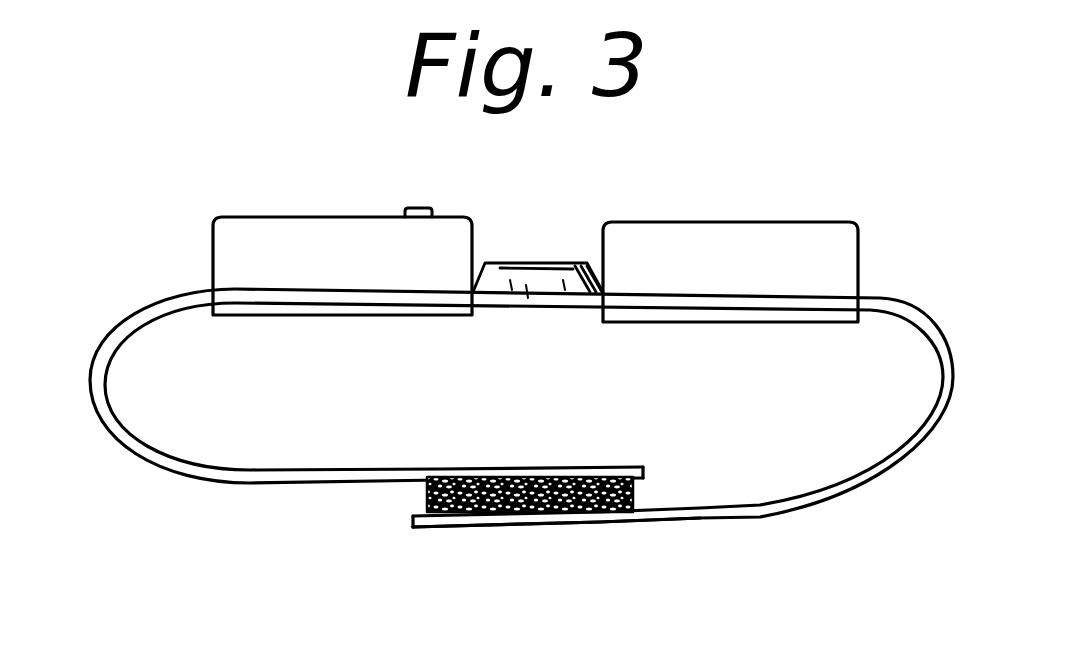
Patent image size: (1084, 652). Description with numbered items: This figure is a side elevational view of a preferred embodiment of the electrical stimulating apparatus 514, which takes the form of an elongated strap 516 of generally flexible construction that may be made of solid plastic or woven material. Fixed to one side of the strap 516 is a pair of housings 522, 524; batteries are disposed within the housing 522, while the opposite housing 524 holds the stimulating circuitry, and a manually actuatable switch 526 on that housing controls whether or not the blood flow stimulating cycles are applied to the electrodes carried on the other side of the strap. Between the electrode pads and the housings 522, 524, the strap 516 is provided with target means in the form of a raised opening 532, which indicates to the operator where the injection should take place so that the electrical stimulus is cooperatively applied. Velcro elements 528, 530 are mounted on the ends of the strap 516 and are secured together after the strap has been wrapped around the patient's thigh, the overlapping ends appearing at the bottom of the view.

The electrical stimulating apparatus 514 is at (521, 368).
The elongated strap 516 is at (110, 383).
The housing 522 is at (817, 224).
The housing 524 is at (289, 200).
The manually actuatable switch 526 is at (432, 206).
The Velcro element 528 is at (427, 503).
The Velcro element 530 is at (645, 497).
The raised opening 532 is at (528, 282).